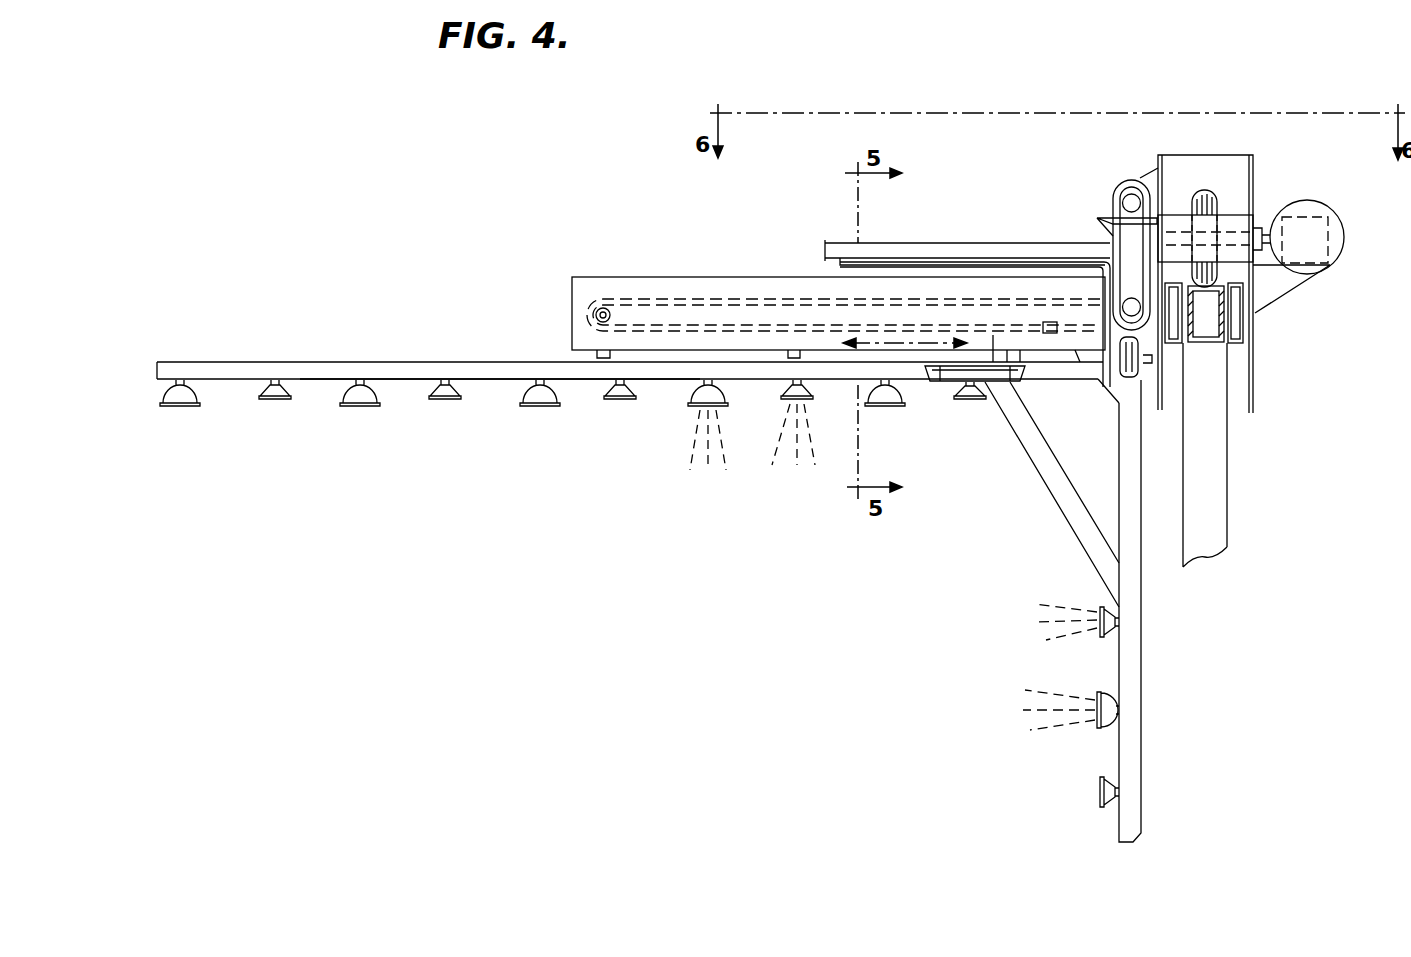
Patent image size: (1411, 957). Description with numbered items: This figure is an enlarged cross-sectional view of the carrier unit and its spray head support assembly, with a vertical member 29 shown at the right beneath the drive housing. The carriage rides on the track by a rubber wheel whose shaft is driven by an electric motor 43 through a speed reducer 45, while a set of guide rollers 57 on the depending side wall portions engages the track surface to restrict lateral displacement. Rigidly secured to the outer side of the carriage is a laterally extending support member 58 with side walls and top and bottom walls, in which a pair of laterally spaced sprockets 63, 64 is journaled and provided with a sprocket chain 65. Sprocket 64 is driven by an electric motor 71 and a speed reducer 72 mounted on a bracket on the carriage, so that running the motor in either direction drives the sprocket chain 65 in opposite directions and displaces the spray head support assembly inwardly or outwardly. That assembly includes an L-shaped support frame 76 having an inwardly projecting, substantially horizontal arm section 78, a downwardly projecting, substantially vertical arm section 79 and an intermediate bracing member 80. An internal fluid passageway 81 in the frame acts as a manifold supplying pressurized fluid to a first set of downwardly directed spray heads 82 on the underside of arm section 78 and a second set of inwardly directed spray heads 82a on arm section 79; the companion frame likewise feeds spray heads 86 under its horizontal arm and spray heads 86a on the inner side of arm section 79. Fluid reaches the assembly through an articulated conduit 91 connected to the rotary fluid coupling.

The column 29 is at (1227, 498).
The electric motor 43 is at (1338, 224).
The speed reducer 45 is at (1330, 250).
The guide rollers 57 is at (1250, 326).
The support member 58 is at (560, 309).
The sprocket 63 is at (609, 307).
The sprocket 64 is at (1108, 303).
The sprocket chain 65 is at (734, 300).
The electric motor 71 is at (1255, 177).
The speed reducer 72 is at (1113, 182).
The L-shaped support frame 76 is at (416, 326).
The horizontal arm section 78 is at (497, 380).
The vertical arm section 79 is at (1143, 752).
The intermediate bracing member 80 is at (1060, 498).
The internal fluid passageway 81 is at (943, 383).
The downwardly directed spray heads 82 is at (275, 400).
The inwardly directed spray heads 82a is at (1100, 637).
The spray heads 86 is at (180, 406).
The spray heads 86a is at (1093, 728).
The articulated conduit 91 is at (956, 243).